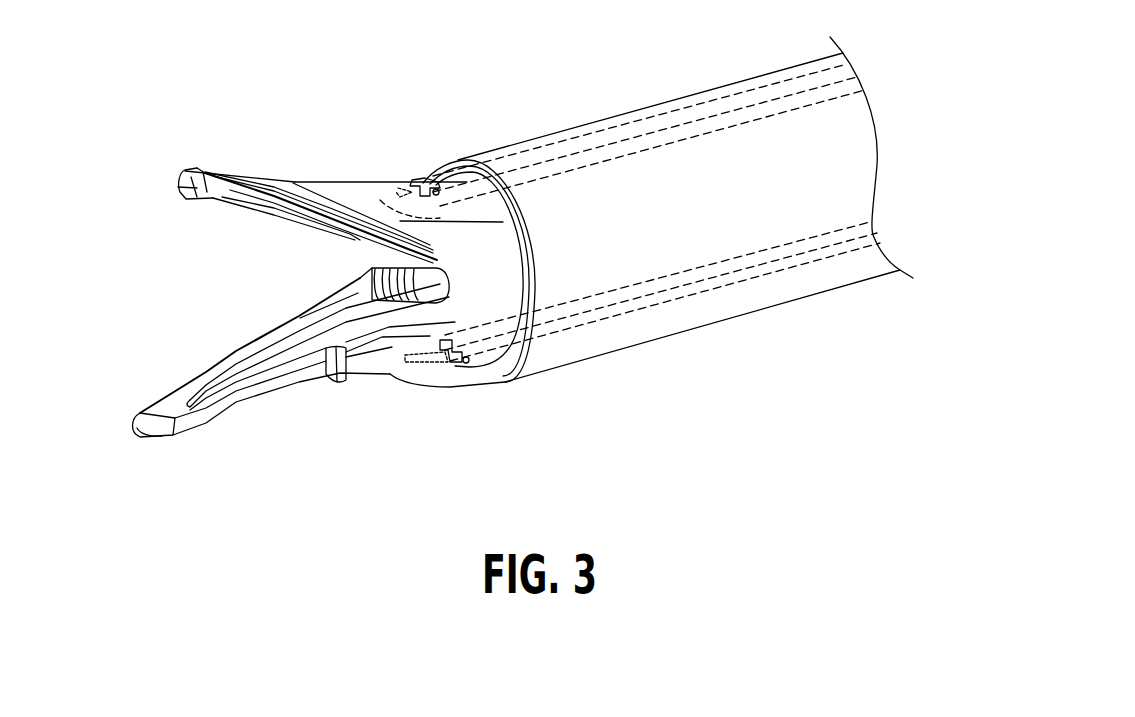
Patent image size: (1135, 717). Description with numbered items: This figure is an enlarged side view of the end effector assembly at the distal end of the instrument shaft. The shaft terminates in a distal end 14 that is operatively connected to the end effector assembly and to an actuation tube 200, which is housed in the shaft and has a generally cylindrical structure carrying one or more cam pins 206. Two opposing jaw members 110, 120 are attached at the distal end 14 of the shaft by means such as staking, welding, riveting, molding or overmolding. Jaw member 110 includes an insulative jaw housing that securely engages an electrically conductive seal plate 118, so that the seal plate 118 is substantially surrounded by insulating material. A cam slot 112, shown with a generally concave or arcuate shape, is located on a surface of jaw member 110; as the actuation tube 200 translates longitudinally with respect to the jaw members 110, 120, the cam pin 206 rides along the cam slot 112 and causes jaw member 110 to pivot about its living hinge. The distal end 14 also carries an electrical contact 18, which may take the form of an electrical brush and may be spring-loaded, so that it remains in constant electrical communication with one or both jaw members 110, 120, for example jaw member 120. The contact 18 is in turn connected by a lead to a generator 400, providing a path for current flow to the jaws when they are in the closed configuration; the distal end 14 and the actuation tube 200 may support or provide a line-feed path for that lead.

The distal end 14 is at (530, 143).
The electrical contact 18 is at (462, 387).
The jaw member 110 is at (188, 143).
The cam slot 112 is at (385, 180).
The seal plate 118 is at (227, 207).
The jaw member 120 is at (163, 462).
The actuation tube 200 is at (670, 127).
The cam pin 206 is at (428, 180).
The generator 400 is at (227, 373).